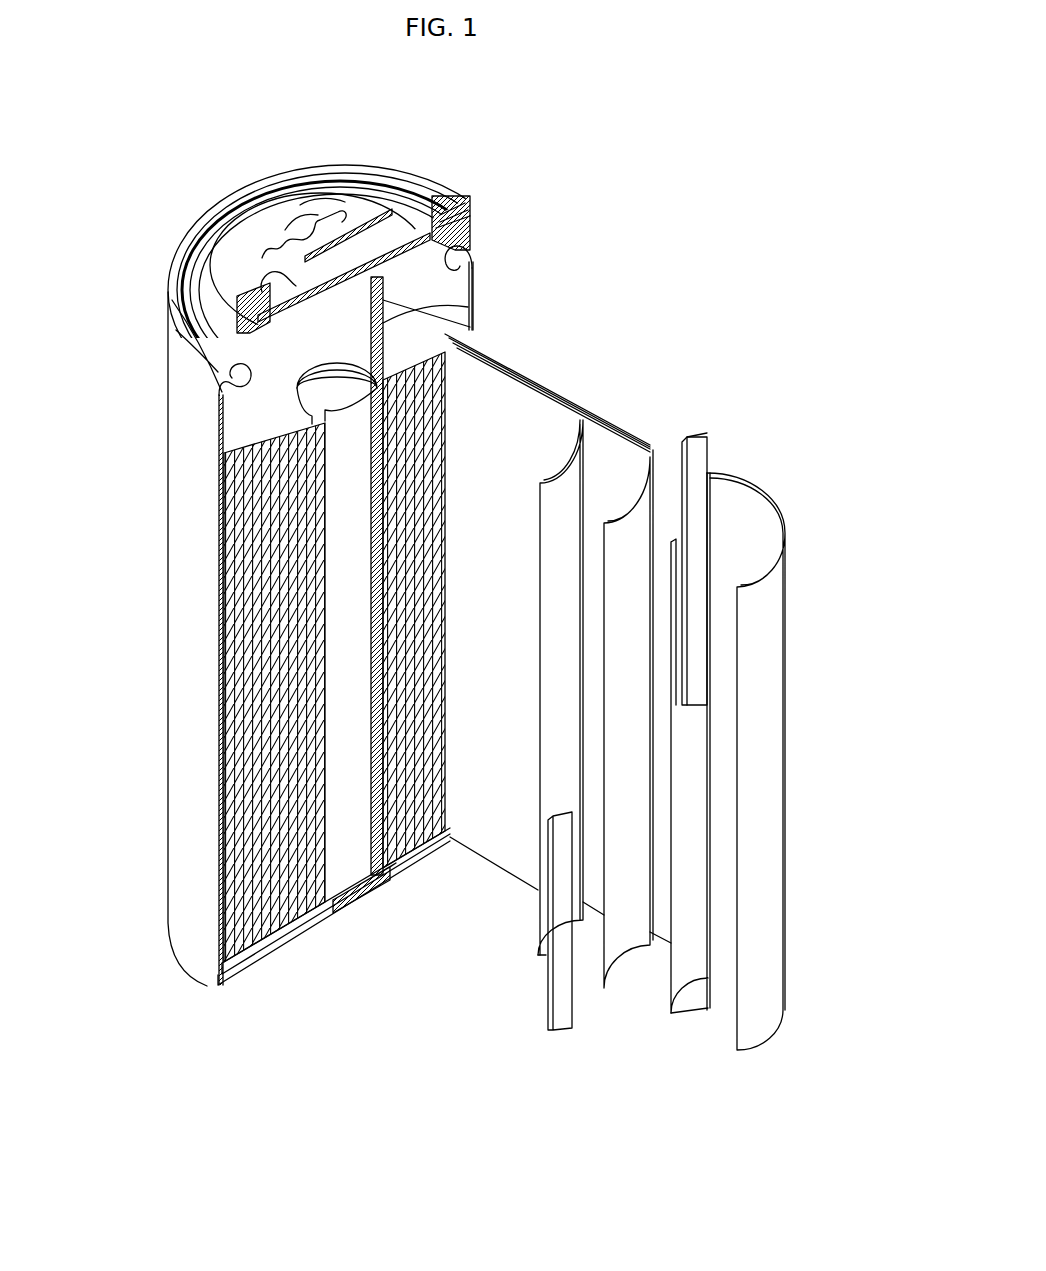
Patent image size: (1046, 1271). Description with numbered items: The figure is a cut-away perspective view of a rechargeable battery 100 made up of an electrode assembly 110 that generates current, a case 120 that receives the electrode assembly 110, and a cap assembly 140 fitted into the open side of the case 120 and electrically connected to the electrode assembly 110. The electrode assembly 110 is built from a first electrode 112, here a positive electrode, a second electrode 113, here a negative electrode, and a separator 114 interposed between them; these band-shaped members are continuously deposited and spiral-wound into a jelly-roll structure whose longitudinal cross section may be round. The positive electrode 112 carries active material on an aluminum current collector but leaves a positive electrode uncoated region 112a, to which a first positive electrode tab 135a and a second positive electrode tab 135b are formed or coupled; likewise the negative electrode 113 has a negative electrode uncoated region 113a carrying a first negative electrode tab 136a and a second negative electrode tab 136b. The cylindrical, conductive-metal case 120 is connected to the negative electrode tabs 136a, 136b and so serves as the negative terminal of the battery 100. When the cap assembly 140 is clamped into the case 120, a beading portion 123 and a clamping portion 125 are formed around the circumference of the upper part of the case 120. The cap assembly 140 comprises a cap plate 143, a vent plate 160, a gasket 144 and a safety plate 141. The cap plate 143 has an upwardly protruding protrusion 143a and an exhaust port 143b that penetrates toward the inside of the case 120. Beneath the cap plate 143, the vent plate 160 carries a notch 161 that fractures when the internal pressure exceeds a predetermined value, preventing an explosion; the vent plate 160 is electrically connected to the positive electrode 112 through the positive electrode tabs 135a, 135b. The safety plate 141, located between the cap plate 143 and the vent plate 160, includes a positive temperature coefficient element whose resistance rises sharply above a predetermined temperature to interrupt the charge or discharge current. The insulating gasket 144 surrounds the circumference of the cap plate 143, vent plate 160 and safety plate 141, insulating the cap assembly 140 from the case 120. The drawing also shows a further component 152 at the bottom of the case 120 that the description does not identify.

The rechargeable battery 100 is at (372, 99).
The electrode assembly 110 is at (410, 852).
The first electrode 112 is at (710, 1012).
The positive electrode uncoated region 112a is at (682, 1005).
The second electrode 113 is at (536, 908).
The negative electrode uncoated region 113a is at (542, 948).
The separator 114 is at (623, 977).
The case 120 is at (170, 565).
The beading portion 123 is at (230, 380).
The clamping portion 125 is at (215, 345).
The first positive electrode tab 135a is at (470, 308).
The second positive electrode tab 135b is at (698, 435).
The first negative electrode tab 136a is at (358, 912).
The second negative electrode tab 136b is at (560, 1010).
The cap assembly 140 is at (397, 277).
The safety plate 141 is at (460, 204).
The cap plate 143 is at (458, 180).
The protrusion 143a is at (316, 218).
The exhaust port 143b is at (302, 280).
The gasket 144 is at (460, 234).
The lower insulating plate 152 is at (275, 937).
The vent plate 160 is at (466, 214).
The notch 161 is at (430, 212).